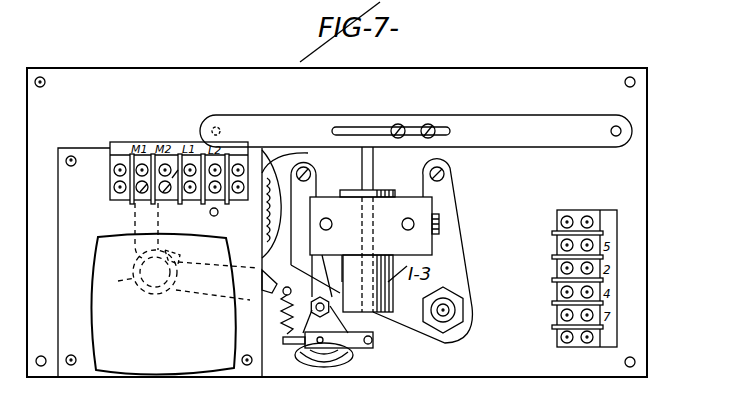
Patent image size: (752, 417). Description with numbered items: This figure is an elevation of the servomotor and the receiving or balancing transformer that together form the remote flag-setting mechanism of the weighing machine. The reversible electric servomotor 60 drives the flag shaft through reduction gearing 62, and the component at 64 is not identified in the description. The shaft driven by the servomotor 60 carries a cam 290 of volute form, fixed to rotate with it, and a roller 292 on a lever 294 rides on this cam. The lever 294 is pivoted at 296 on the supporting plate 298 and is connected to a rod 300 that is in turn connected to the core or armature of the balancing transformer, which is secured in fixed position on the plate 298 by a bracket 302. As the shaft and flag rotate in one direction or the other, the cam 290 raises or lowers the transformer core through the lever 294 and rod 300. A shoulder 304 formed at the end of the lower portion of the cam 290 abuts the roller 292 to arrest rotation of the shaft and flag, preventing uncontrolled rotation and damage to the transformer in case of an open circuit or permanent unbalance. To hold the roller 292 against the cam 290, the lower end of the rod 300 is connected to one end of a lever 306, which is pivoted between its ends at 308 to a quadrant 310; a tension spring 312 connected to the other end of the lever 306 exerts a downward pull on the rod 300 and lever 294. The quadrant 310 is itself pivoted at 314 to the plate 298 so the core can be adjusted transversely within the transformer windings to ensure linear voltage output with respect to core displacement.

The servomotor 60 is at (106, 243).
The reduction gearing 62 is at (262, 208).
The drive mechanism 64 is at (179, 258).
The cam 290 is at (310, 174).
The roller 292 is at (214, 118).
The lever 294 is at (295, 120).
The pivot 296 is at (622, 131).
The supporting plate 298 is at (538, 77).
The rod 300 is at (373, 181).
The bracket 302 is at (425, 238).
The shoulder 304 is at (262, 281).
The lever 306 is at (374, 345).
The pivot 308 is at (340, 367).
The quadrant 310 is at (297, 325).
The tension spring 312 is at (283, 318).
The pivot 314 is at (318, 292).